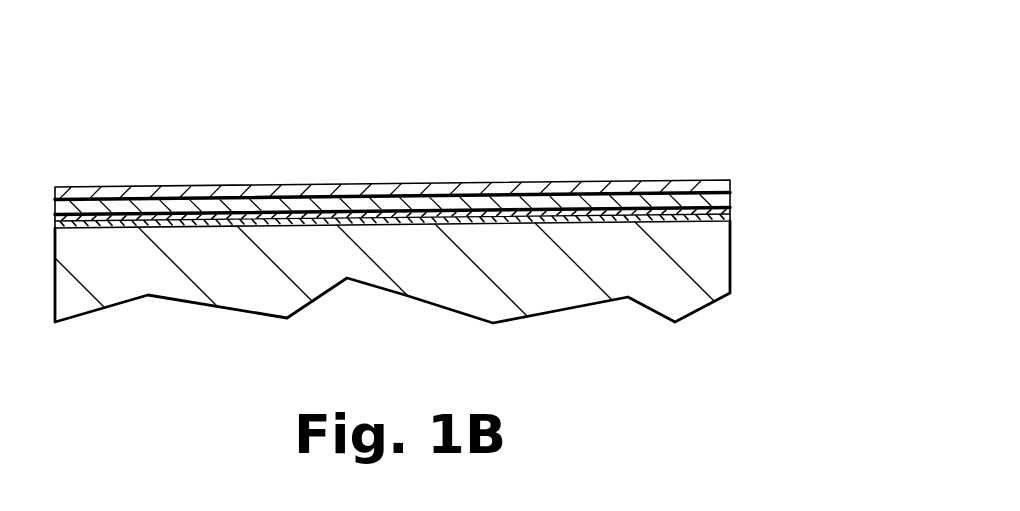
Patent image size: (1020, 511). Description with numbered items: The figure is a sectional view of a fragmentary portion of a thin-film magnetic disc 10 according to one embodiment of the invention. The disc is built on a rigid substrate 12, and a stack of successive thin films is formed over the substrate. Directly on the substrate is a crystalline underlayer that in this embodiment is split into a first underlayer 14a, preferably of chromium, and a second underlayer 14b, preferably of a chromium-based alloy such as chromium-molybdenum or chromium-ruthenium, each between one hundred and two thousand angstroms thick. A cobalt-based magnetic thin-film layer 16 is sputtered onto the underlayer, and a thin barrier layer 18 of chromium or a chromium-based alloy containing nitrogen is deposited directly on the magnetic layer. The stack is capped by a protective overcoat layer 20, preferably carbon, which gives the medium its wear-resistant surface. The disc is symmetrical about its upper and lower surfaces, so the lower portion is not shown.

The thin-film magnetic disc 10 is at (607, 137).
The rigid substrate 12 is at (535, 302).
The first underlayer 14a is at (732, 219).
The second underlayer 14b is at (731, 206).
The magnetic thin-film layer 16 is at (731, 198).
The barrier layer 18 is at (731, 190).
The protective overcoat layer 20 is at (722, 186).